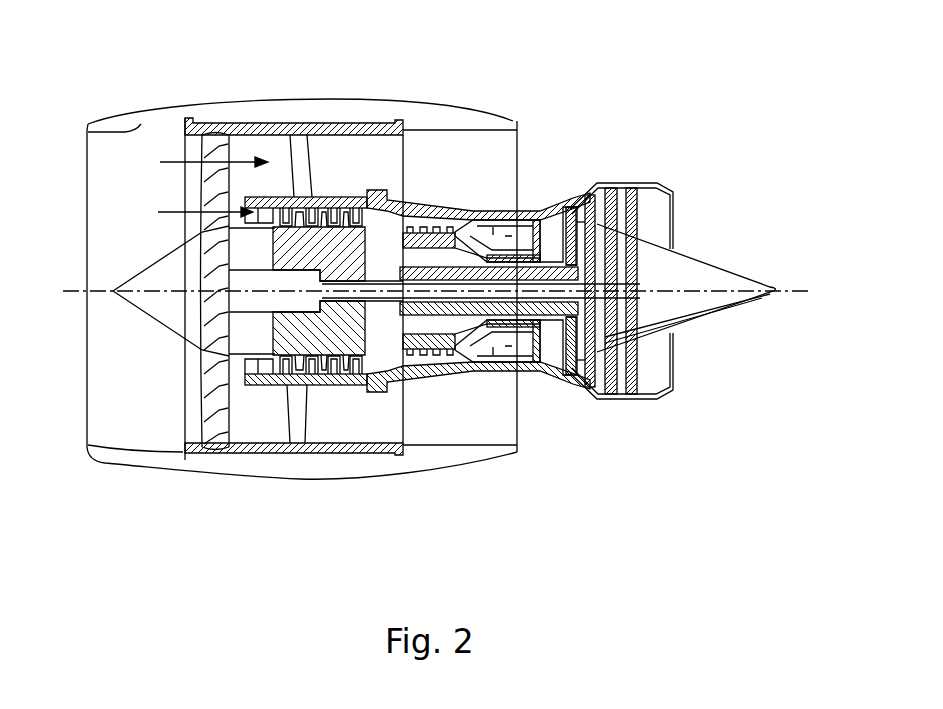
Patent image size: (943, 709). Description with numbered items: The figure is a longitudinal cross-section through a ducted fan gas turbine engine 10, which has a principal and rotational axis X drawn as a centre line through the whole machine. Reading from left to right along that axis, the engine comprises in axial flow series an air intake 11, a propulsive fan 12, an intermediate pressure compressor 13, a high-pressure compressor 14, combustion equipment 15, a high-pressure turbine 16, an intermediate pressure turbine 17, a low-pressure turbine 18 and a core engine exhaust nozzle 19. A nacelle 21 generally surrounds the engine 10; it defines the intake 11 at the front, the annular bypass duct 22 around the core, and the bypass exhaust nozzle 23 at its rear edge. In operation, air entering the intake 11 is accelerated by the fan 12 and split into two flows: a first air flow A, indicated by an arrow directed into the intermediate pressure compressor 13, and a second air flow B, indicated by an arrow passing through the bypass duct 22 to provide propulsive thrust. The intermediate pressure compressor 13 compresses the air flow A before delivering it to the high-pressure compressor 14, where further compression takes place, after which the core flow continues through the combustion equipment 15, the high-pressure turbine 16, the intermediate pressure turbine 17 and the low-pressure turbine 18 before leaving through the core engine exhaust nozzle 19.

The ducted fan gas turbine engine 10 is at (157, 80).
The air intake 11 is at (137, 133).
The propulsive fan 12 is at (205, 398).
The intermediate pressure compressor 13 is at (330, 366).
The high-pressure compressor 14 is at (430, 227).
The combustion equipment 15 is at (482, 350).
The high-pressure turbine 16 is at (518, 368).
The intermediate pressure turbine 17 is at (560, 203).
The low-pressure turbine 18 is at (583, 388).
The core engine exhaust nozzle 19 is at (667, 183).
The nacelle 21 is at (303, 98).
The bypass duct 22 is at (488, 168).
The bypass exhaust nozzle 23 is at (517, 123).
The first air flow A is at (195, 214).
The second air flow B is at (204, 164).
The principal and rotational axis X is at (436, 293).